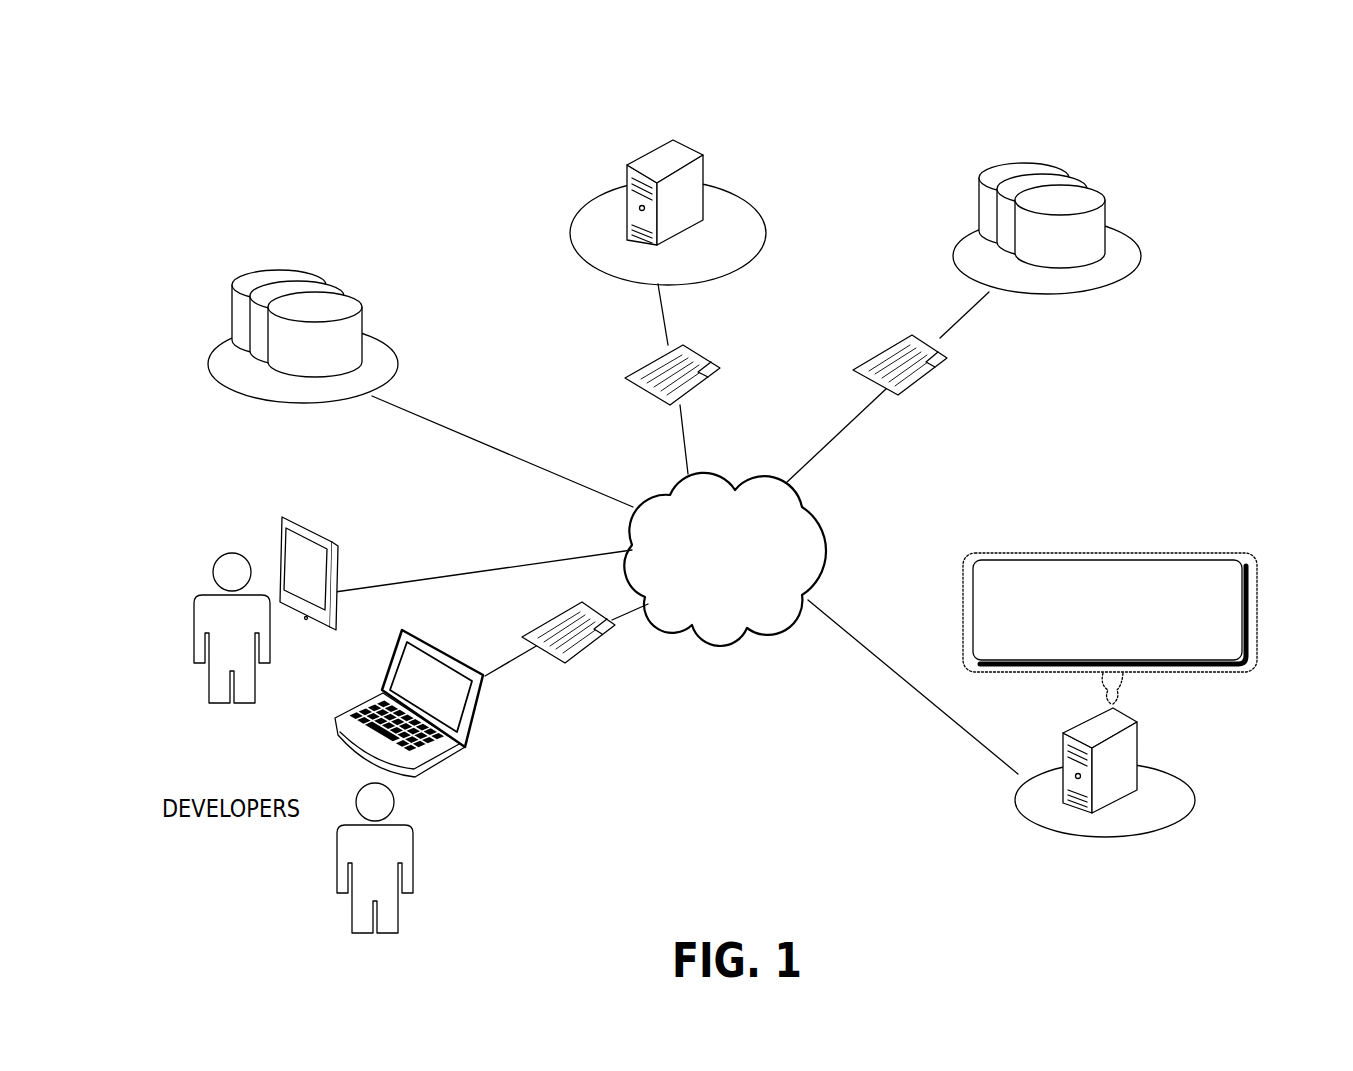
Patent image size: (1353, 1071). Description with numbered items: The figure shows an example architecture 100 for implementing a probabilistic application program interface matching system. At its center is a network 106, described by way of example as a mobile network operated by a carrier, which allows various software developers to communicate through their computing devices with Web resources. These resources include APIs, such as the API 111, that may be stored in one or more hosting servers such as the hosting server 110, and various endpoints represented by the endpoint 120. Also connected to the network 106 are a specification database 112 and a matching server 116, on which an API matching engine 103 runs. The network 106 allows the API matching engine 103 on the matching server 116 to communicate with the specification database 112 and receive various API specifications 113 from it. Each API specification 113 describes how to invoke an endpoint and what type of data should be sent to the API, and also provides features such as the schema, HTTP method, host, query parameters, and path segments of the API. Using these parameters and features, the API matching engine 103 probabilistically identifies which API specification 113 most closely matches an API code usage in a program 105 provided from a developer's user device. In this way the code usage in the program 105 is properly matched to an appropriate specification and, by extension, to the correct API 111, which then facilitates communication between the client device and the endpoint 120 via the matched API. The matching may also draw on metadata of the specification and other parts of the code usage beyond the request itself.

The architecture 100 is at (160, 97).
The API matching engine 103 is at (1123, 636).
The program 105 is at (592, 653).
The network 106 is at (632, 544).
The hosting server 110 is at (767, 222).
The API 111 is at (660, 369).
The specification database 112 is at (1112, 224).
The API specification 113 is at (903, 383).
The matching server 116 is at (1183, 782).
The endpoint 120 is at (386, 334).